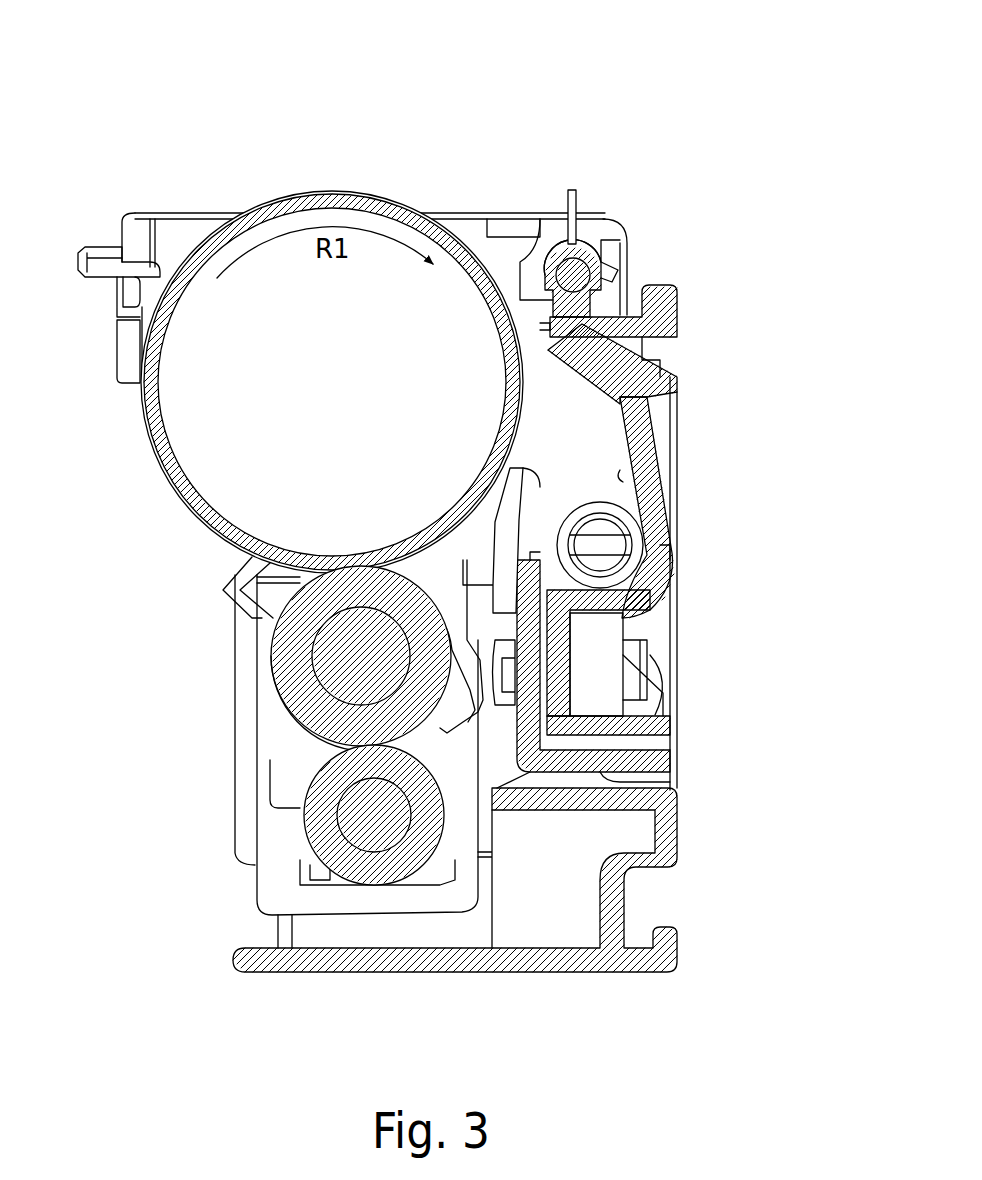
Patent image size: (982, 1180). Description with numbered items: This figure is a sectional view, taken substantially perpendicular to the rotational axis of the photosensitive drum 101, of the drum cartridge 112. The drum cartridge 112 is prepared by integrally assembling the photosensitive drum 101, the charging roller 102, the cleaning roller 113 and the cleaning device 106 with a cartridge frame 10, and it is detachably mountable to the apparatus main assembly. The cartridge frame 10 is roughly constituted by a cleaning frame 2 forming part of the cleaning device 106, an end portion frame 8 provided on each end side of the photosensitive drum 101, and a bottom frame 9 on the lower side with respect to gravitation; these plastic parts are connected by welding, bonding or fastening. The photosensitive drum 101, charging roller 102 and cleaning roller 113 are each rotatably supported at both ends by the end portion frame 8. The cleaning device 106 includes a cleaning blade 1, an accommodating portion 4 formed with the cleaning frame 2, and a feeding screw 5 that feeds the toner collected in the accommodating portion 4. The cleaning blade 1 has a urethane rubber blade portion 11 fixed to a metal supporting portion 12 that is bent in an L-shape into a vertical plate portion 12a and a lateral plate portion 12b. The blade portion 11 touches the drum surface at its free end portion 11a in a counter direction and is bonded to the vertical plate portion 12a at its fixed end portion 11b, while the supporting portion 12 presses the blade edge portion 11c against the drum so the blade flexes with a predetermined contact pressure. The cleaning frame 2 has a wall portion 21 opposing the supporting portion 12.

The drum cartridge 112 is at (515, 98).
The photosensitive drum 101 is at (185, 507).
The charging roller 102 is at (272, 655).
The cleaning roller 113 is at (305, 813).
The end portion frame 8 is at (518, 212).
The cartridge frame 10 is at (620, 216).
The blade portion 11 is at (517, 513).
The free end portion 11a is at (528, 478).
The fixed end portion 11b is at (548, 632).
The blade edge portion 11c is at (512, 468).
The supporting portion 12 is at (550, 547).
The vertical plate portion 12a is at (530, 700).
The lateral plate portion 12b is at (612, 778).
The cleaning blade 1 is at (758, 386).
The cleaning frame 2 is at (673, 555).
The accommodating portion 4 is at (627, 480).
The feeding screw 5 is at (607, 493).
The bottom frame 9 is at (678, 837).
The wall portion 21 is at (542, 655).
The cleaning device 106 is at (680, 530).